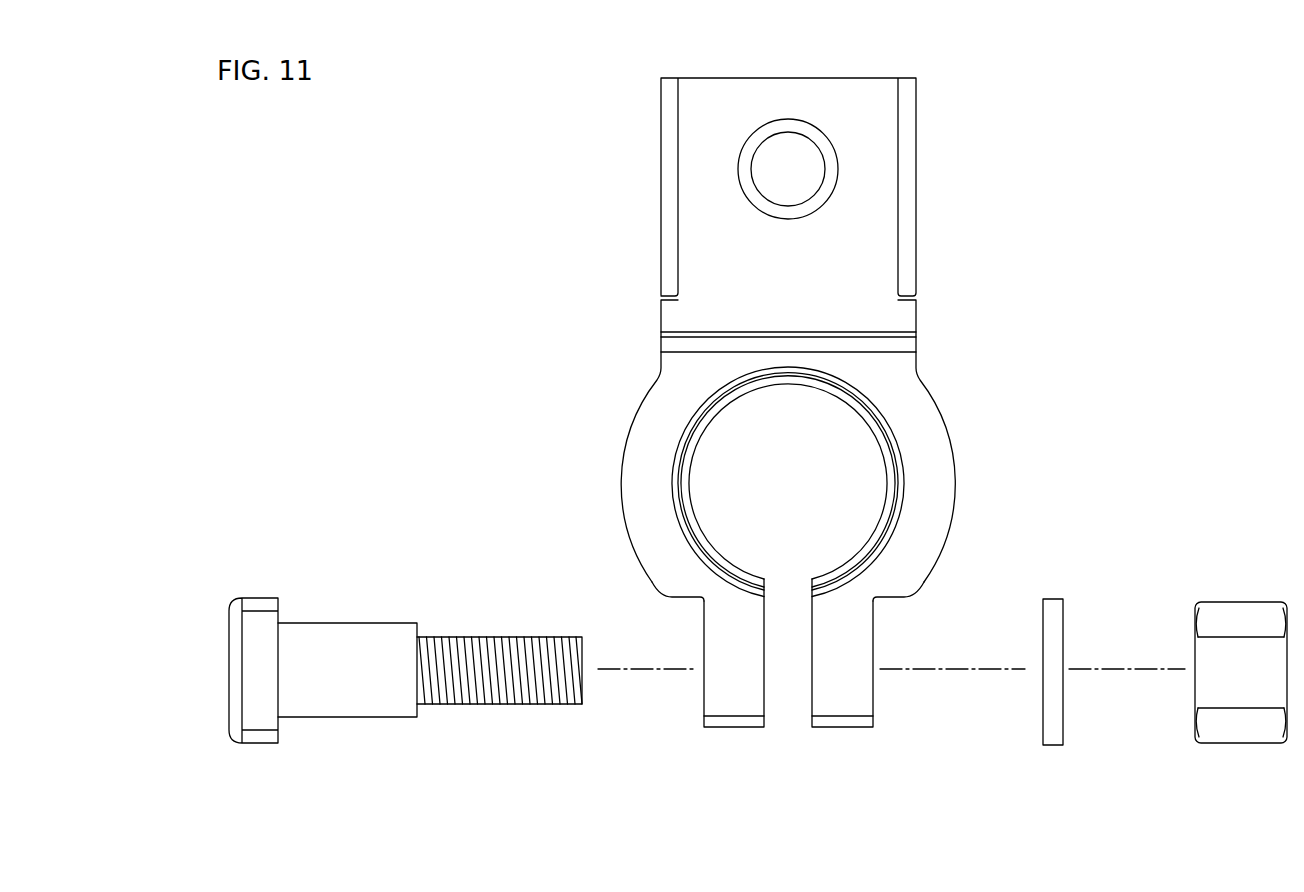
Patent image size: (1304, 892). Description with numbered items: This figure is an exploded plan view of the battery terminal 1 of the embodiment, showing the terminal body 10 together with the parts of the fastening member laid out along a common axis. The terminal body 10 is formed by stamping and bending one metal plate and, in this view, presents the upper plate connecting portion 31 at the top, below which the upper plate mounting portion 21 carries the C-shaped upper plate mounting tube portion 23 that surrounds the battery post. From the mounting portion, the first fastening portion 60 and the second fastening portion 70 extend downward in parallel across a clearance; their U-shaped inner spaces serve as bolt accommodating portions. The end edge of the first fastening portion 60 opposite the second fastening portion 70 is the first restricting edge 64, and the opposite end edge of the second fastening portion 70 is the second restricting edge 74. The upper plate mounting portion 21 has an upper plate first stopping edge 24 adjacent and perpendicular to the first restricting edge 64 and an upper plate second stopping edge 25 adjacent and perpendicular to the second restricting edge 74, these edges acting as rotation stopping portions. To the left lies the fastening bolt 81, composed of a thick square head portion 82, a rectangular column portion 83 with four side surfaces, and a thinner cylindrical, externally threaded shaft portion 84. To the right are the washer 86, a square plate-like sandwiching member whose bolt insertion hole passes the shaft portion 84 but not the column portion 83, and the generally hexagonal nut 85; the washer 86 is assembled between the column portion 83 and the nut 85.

The battery terminal 1 is at (1216, 153).
The terminal body 10 is at (1020, 244).
The upper plate mounting portion 21 is at (938, 480).
The upper plate mounting tube portion 23 is at (872, 425).
The upper plate first stopping edge 24 is at (684, 600).
The upper plate second stopping edge 25 is at (891, 600).
The upper plate connecting portion 31 is at (946, 159).
The first fastening portion 60 is at (708, 699).
The first restricting edge 64 is at (702, 702).
The second fastening portion 70 is at (865, 699).
The second restricting edge 74 is at (873, 698).
The fastening bolt 81 is at (405, 631).
The head portion 82 is at (257, 715).
The column portion 83 is at (360, 690).
The shaft portion 84 is at (510, 693).
The nut 85 is at (1240, 737).
The washer 86 is at (1052, 738).